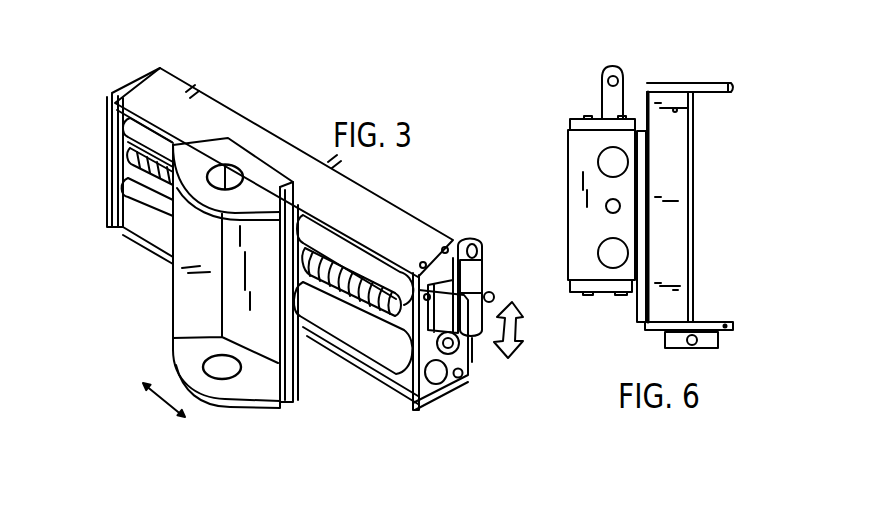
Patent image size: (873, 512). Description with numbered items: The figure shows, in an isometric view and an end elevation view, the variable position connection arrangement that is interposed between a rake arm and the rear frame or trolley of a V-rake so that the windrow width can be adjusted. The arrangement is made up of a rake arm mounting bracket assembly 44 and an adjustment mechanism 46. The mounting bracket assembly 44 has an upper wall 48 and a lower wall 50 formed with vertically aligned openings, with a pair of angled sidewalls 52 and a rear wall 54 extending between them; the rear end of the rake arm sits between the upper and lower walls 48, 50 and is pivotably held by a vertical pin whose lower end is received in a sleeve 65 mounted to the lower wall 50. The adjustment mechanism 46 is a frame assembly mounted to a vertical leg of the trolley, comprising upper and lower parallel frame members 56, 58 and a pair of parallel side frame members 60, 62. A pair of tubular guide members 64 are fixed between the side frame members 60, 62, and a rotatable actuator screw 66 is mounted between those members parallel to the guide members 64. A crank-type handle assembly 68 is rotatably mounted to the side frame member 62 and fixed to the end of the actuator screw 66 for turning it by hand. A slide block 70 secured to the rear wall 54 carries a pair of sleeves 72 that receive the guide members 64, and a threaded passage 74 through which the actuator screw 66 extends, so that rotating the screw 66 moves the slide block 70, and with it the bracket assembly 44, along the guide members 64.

In FIG. 3, the rake arm mounting bracket assembly 44 is at (165, 354).
In FIG. 6, the rake arm mounting bracket assembly 44 is at (636, 331).
In FIG. 3, the adjustment mechanism 46 is at (102, 95).
In FIG. 6, the adjustment mechanism 46 is at (572, 112).
In FIG. 3, the upper wall 48 is at (228, 154).
In FIG. 6, the upper wall 48 is at (727, 82).
In FIG. 3, the lower wall 50 is at (257, 383).
In FIG. 6, the lower wall 50 is at (729, 332).
In FIG. 3, the angled sidewalls 52 is at (182, 285).
In FIG. 6, the angled sidewalls 52 is at (676, 256).
In FIG. 3, the rear wall 54 is at (233, 303).
In FIG. 3, the upper frame member 56 is at (195, 101).
In FIG. 3, the lower frame member 58 is at (376, 385).
In FIG. 3, the side frame member 60 is at (107, 168).
In FIG. 6, the side frame member 60 is at (588, 223).
In FIG. 3, the side frame member 62 is at (452, 375).
In FIG. 3, the tubular guide members 64 is at (385, 265).
In FIG. 6, the sleeve 65 is at (662, 342).
In FIG. 3, the actuator screw 66 is at (152, 180).
In FIG. 3, the crank-type handle assembly 68 is at (491, 238).
In FIG. 3, the slide block 70 is at (310, 345).
In FIG. 6, the slide block 70 is at (639, 124).
In FIG. 3, the sleeves 72 is at (314, 212).
In FIG. 3, the threaded passage 74 is at (322, 232).